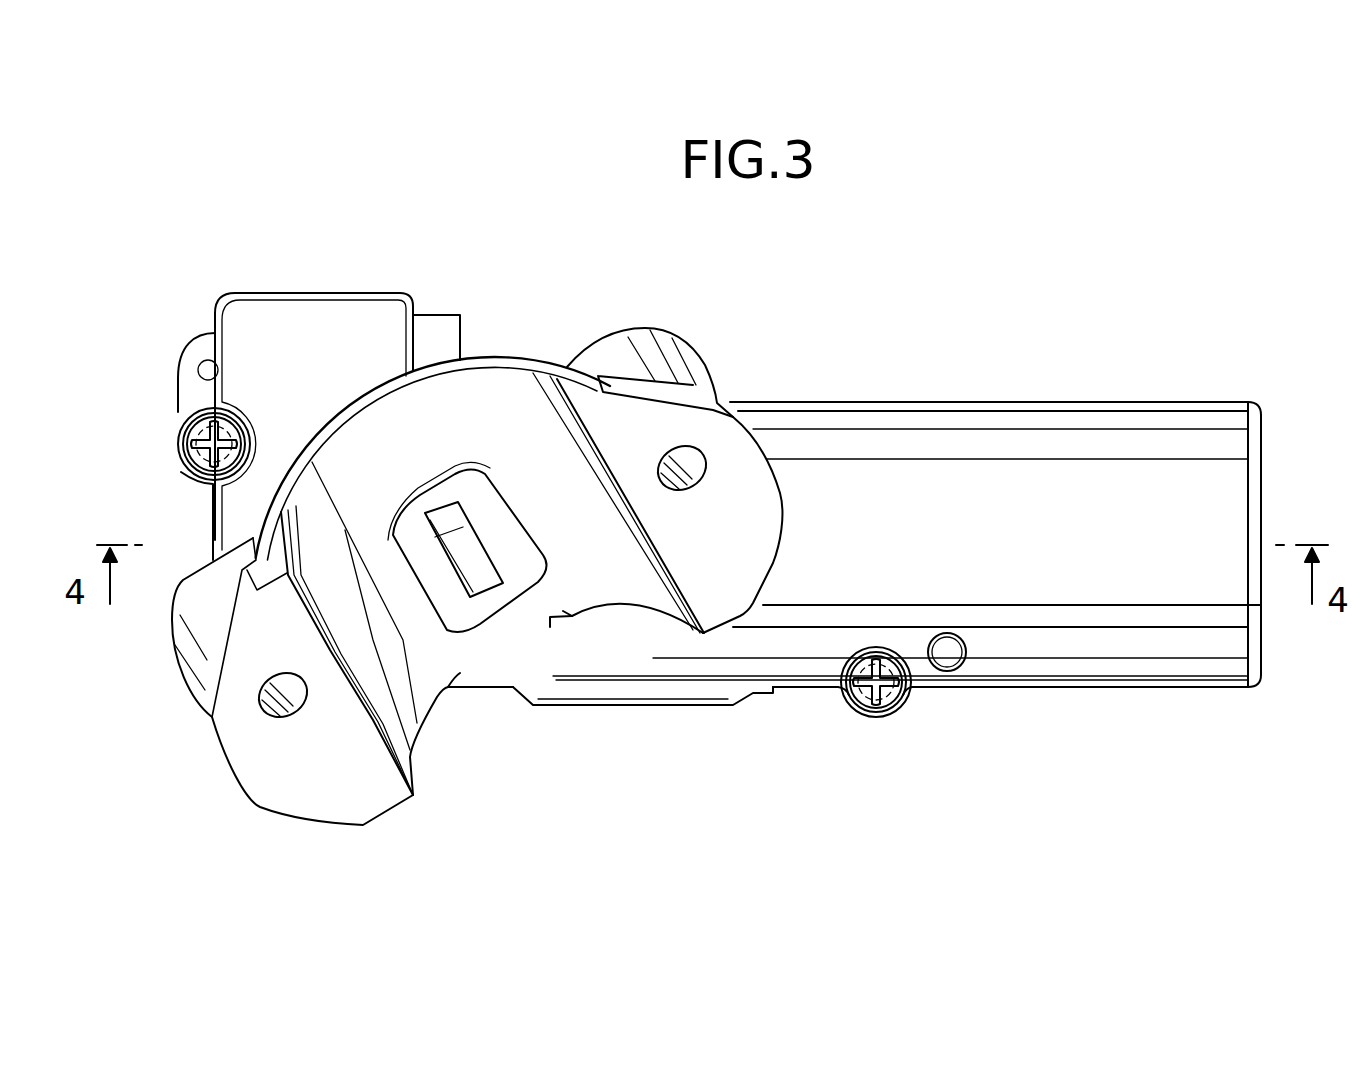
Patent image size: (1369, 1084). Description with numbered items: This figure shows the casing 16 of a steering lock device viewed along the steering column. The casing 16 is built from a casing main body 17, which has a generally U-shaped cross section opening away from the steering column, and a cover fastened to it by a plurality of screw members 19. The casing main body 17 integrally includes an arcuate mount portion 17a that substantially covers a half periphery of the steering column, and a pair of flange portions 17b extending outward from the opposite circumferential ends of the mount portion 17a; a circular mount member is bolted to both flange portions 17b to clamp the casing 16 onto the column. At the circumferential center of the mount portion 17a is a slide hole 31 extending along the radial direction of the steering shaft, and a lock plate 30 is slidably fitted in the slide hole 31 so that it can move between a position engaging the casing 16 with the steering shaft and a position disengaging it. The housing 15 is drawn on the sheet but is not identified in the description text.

The housing 15 is at (1137, 399).
The housing body 16 is at (1110, 556).
The clamp band 17 is at (1134, 648).
The arched portion of band 17a is at (350, 423).
The flange of band 17b is at (270, 765).
The screw 19 is at (197, 437).
The recess 30 is at (473, 553).
The slot 31 is at (450, 560).